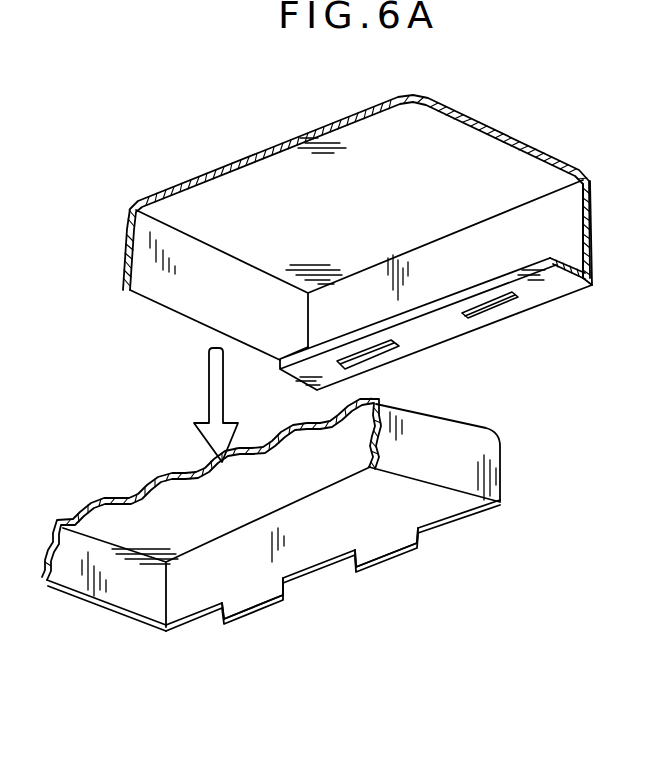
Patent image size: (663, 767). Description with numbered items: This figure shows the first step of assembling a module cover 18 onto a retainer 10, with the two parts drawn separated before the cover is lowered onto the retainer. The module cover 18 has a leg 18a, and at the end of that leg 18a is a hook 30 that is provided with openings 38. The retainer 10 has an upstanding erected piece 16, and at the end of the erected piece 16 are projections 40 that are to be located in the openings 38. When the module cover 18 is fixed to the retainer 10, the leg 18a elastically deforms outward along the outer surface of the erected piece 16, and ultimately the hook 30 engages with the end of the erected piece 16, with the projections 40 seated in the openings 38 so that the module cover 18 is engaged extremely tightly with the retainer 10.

The retainer 10 is at (310, 542).
The erected piece 16 is at (278, 593).
The module cover 18 is at (390, 228).
The leg 18a is at (588, 225).
The hook 30 is at (436, 333).
The openings 38 is at (384, 352).
The projections 40 is at (390, 554).